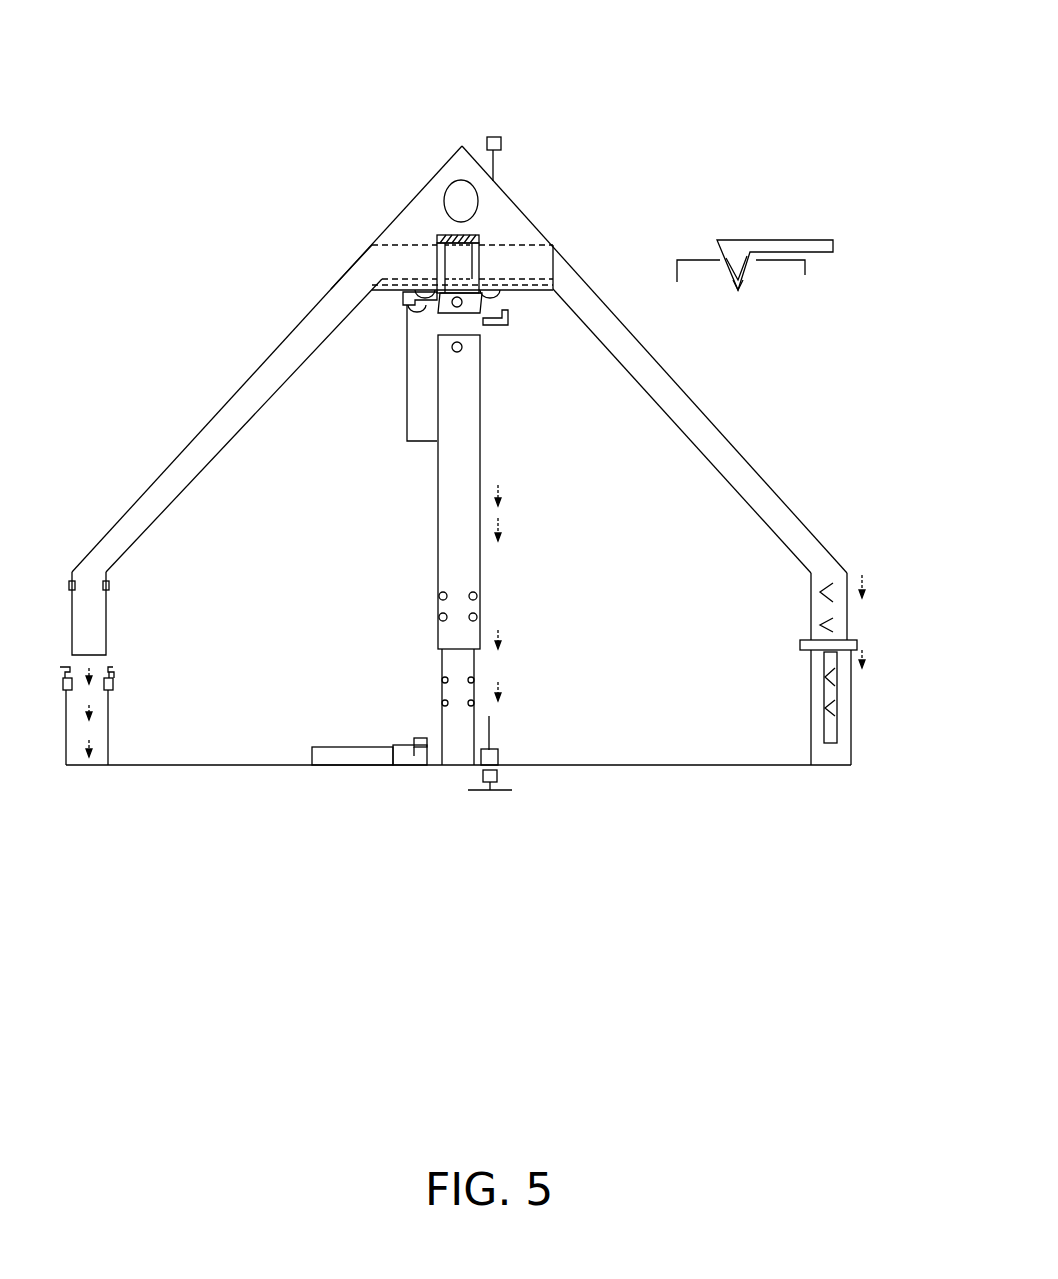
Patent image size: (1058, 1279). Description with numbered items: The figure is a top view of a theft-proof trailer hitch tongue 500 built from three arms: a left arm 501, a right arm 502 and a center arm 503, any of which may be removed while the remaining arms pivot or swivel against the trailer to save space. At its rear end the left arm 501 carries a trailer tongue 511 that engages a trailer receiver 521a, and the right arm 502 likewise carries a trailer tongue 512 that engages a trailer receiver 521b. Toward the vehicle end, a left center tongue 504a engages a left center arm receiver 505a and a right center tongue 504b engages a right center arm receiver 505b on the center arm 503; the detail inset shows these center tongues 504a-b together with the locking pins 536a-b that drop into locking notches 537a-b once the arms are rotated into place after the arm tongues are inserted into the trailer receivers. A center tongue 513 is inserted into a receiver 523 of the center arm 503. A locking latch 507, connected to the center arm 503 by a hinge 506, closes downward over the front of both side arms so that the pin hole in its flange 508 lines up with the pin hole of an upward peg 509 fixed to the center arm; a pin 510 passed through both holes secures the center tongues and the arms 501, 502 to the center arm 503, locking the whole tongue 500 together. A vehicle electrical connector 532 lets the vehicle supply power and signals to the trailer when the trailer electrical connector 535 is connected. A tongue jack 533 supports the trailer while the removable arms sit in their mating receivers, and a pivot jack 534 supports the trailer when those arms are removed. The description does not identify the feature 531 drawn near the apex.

The theft-proof trailer hitch tongue 500 is at (192, 52).
The left arm 501 is at (213, 460).
The right arm 502 is at (722, 452).
The center arm 503 is at (480, 437).
The left center tongue 504a is at (392, 265).
The right center tongue 504b is at (528, 267).
The left center arm receiver 505a is at (410, 245).
The right center arm receiver 505b is at (527, 243).
The hinge 506 is at (447, 233).
The locking latch 507 is at (468, 262).
The flange with latch pin hole 508 is at (487, 304).
The peg with peg pin hole 509 is at (452, 320).
The pin 510 is at (497, 327).
The trailer tongue 511 is at (93, 655).
The trailer tongue 512 is at (840, 640).
The center tongue 513 is at (478, 668).
The trailer receiver 521a is at (102, 740).
The trailer receiver 521b is at (852, 697).
The receiver 523 is at (480, 600).
The opening 531 is at (449, 190).
The vehicle electrical connector 532 is at (493, 137).
The tongue jack 533 is at (407, 430).
The pivot jack 534 is at (341, 766).
The trailer electrical connector 535 is at (499, 775).
The center tongues 504a-b is at (808, 240).
The locking pins 536a-b is at (738, 262).
The locking notches 537a-b is at (738, 290).